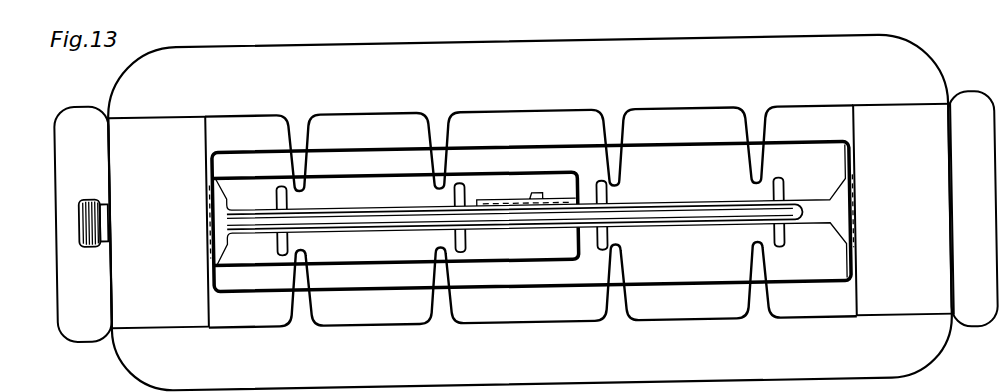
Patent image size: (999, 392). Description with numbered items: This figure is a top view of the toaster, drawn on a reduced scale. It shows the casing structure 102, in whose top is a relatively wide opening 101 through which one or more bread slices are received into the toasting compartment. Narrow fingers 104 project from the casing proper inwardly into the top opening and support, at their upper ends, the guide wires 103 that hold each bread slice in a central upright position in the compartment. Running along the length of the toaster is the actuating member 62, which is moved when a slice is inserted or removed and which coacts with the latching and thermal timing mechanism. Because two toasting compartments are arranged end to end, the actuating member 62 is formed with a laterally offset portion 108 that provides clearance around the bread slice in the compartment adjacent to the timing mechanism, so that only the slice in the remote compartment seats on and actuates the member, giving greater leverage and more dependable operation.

The casing structure 102 is at (541, 42).
The opening 101 is at (383, 111).
The fingers 104 is at (613, 130).
The laterally offset portion 108 is at (513, 172).
The guide wires 103 is at (299, 248).
The actuating member 62 is at (704, 205).